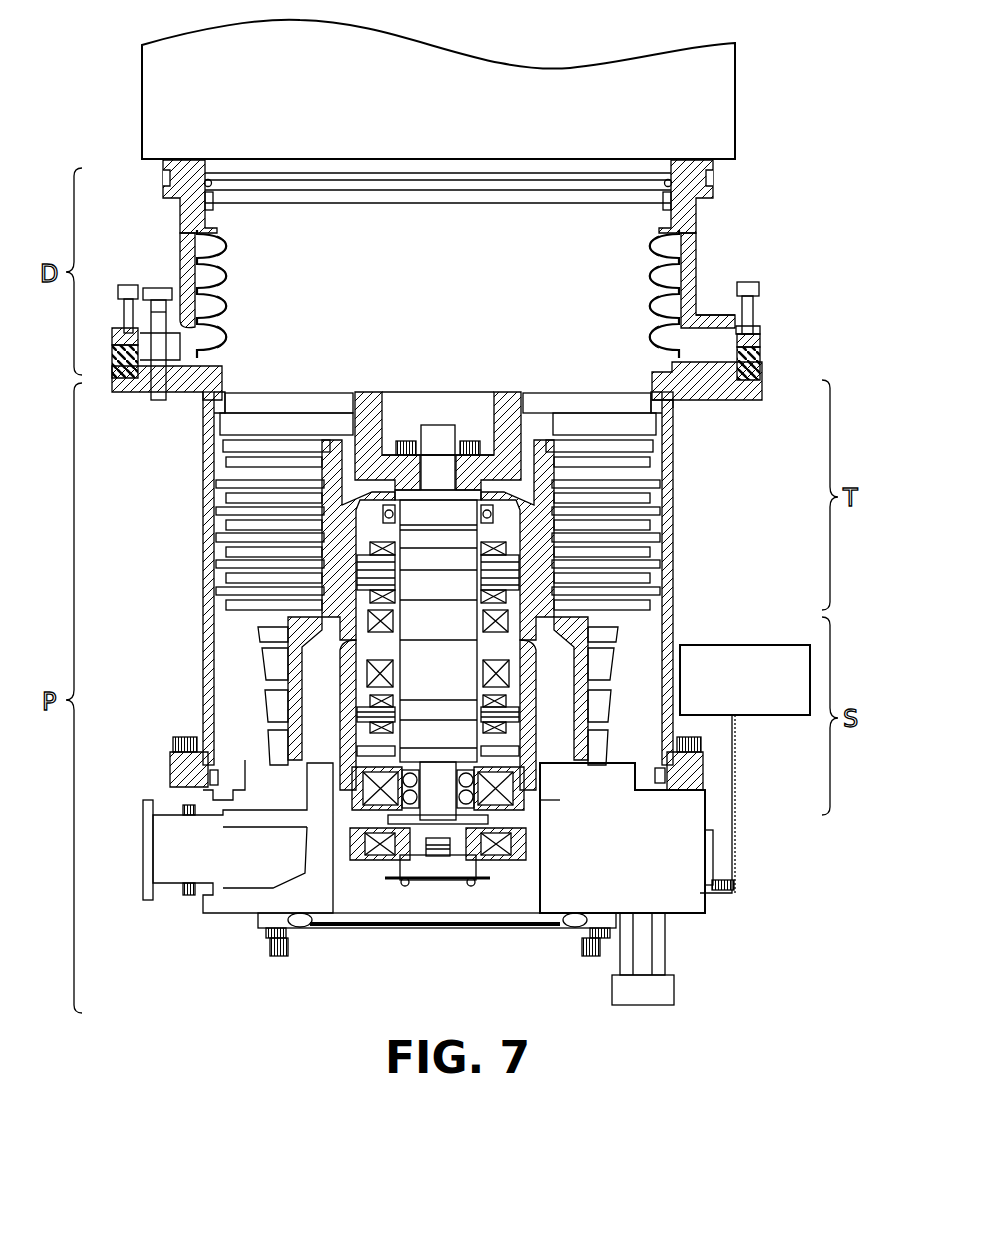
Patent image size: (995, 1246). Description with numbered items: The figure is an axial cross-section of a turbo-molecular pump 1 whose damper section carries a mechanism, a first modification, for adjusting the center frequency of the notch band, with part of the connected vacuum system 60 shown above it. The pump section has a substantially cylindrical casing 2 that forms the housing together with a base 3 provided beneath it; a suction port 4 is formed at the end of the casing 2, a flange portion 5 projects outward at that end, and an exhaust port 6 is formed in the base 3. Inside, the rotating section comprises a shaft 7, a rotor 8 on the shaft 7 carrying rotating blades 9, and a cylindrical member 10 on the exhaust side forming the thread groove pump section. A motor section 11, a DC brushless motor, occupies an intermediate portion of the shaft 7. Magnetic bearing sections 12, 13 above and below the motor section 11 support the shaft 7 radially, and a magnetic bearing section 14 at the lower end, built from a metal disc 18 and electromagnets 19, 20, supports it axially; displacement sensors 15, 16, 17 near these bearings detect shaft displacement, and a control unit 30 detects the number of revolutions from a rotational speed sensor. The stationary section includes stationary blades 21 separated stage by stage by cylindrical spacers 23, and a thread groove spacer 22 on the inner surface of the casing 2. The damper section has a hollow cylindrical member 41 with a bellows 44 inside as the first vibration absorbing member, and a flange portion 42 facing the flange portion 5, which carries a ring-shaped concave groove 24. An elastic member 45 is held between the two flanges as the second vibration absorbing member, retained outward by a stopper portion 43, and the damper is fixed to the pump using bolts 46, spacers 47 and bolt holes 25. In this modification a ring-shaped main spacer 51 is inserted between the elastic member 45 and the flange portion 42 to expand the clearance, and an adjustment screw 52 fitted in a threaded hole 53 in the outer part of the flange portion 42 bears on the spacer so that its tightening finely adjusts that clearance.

The turbo-molecular pump 1 is at (768, 213).
The casing 2 is at (674, 479).
The base 3 is at (710, 898).
The suction port 4 is at (434, 368).
The flange portion 5 is at (703, 418).
The exhaust port 6 is at (142, 853).
The shaft 7 is at (438, 428).
The rotor 8 is at (383, 393).
The rotating blades 9 is at (314, 393).
The cylindrical member 10 is at (325, 690).
The motor section 11 is at (347, 653).
The magnetic bearing section 12 is at (345, 570).
The magnetic bearing section 13 is at (350, 712).
The magnetic bearing section 14 is at (357, 873).
The displacement sensor 15 is at (345, 527).
The displacement sensor 16 is at (236, 755).
The displacement sensor 17 is at (430, 872).
The metal disc 18 is at (455, 878).
The electromagnet 19 is at (522, 812).
The electromagnet 20 is at (505, 812).
The stationary blades 21 is at (240, 428).
The thread groove spacer 22 is at (226, 636).
The spacers 23 is at (214, 450).
The concave groove 24 is at (748, 396).
The bolt holes 25 is at (150, 397).
The control unit 30 is at (758, 718).
The cylindrical member 41 is at (698, 242).
The flange portion 42 is at (706, 315).
The stopper portion 43 is at (766, 330).
The bellows 44 is at (650, 285).
The elastic member 45 is at (763, 361).
The bolts 46 is at (152, 288).
The spacers 47 is at (176, 330).
The main spacer 51 is at (735, 338).
The adjustment screw 52 is at (748, 283).
The threaded hole 53 is at (757, 312).
The vacuum system 60 is at (737, 148).